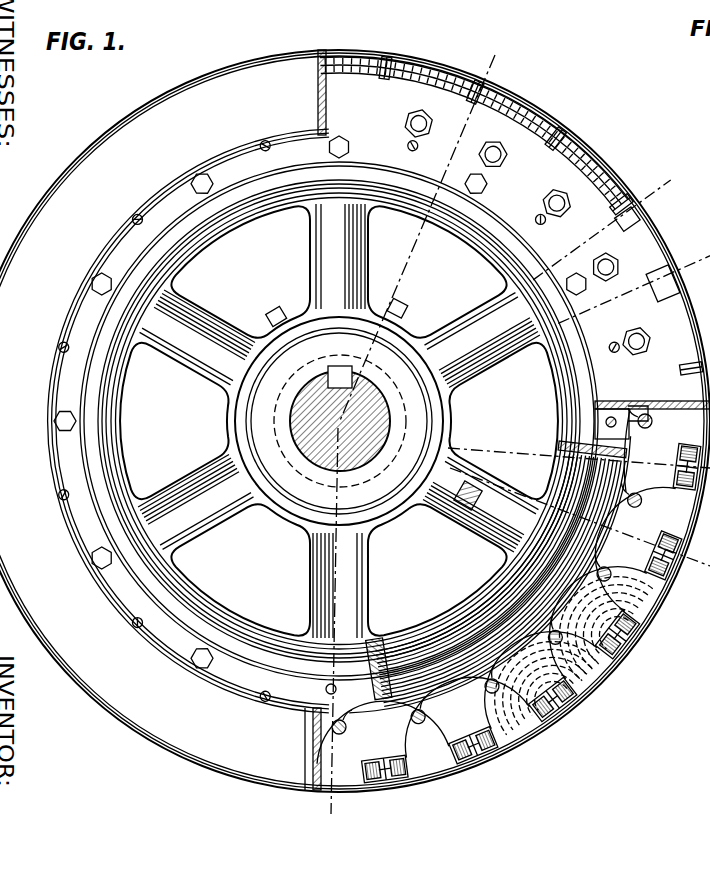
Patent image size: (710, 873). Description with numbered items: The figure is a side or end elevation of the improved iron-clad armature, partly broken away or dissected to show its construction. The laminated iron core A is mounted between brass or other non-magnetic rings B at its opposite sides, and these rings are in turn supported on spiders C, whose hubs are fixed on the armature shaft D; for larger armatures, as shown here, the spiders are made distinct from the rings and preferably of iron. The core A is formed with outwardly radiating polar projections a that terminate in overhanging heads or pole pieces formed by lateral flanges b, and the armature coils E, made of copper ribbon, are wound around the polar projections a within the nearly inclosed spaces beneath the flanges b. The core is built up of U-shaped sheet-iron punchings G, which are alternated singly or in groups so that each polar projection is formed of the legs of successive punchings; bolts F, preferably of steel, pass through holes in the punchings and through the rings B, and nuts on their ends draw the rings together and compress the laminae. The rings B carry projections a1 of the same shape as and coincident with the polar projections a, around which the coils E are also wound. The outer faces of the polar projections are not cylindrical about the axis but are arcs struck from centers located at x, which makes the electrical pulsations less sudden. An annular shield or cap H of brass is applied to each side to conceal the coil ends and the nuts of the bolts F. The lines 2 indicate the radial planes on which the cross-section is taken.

The annular shield or cap H is at (355, 421).
The armature coils E is at (526, 110).
The bolts F is at (406, 123).
The non-magnetic rings B is at (352, 434).
The spiders C is at (320, 580).
The centers of polar face arcs x is at (450, 411).
The armature shaft D is at (340, 421).
The laminated iron core A is at (522, 658).
The projections of the rings a1 is at (659, 291).
The lateral flanges b is at (668, 272).
The polar projections a is at (531, 594).
The punchings G is at (510, 472).
The section line 2- 2 is at (413, 433).